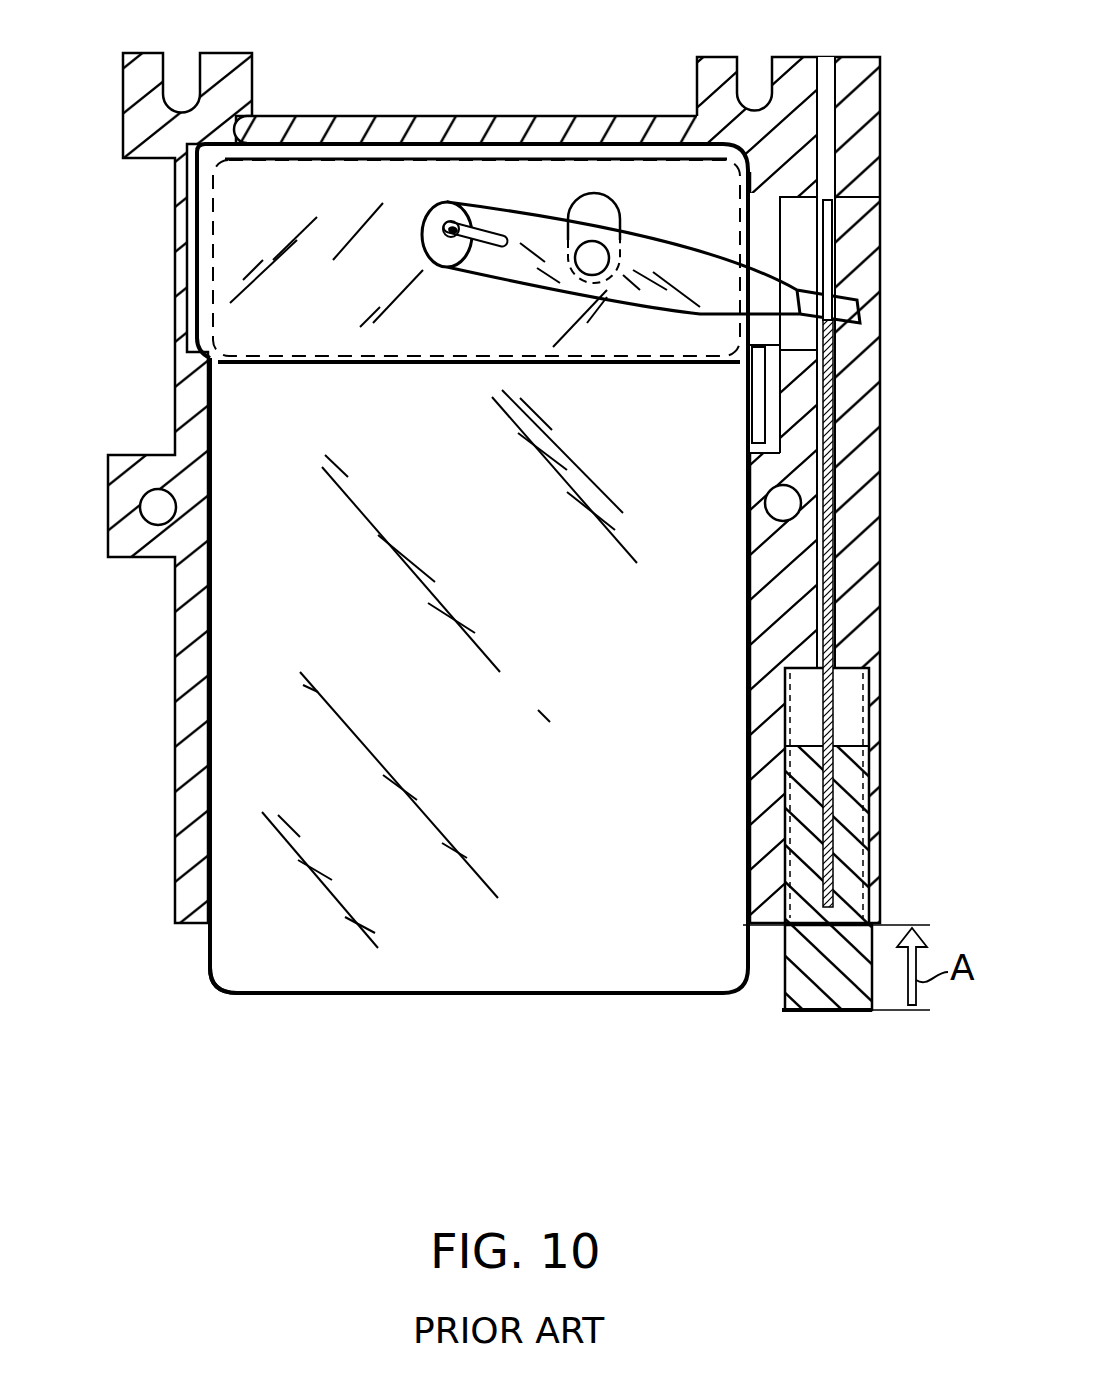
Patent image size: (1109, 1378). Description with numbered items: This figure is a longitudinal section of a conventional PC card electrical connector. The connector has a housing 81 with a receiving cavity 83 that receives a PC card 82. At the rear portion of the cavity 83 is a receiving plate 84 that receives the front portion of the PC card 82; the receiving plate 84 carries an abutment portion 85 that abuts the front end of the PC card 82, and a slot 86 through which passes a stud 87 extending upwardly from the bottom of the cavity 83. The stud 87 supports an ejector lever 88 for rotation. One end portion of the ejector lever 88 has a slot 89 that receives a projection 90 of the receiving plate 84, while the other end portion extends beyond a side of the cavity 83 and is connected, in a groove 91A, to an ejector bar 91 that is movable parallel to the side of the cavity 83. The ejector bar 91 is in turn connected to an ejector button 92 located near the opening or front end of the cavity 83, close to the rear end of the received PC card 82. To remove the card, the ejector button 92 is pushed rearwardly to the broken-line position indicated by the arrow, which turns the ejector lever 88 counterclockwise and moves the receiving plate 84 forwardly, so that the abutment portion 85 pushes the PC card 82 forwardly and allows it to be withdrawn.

The housing 81 is at (187, 676).
The PC card 82 is at (368, 978).
The receiving cavity 83 is at (213, 880).
The receiving plate 84 is at (340, 195).
The abutment portion 85 is at (250, 112).
The slot 86 is at (593, 200).
The stud 87 is at (594, 258).
The ejector lever 88 is at (690, 237).
The slot 89 is at (458, 226).
The projection 90 is at (466, 262).
The ejector bar 91 is at (833, 397).
The groove 91A is at (831, 270).
The ejector button 92 is at (848, 840).